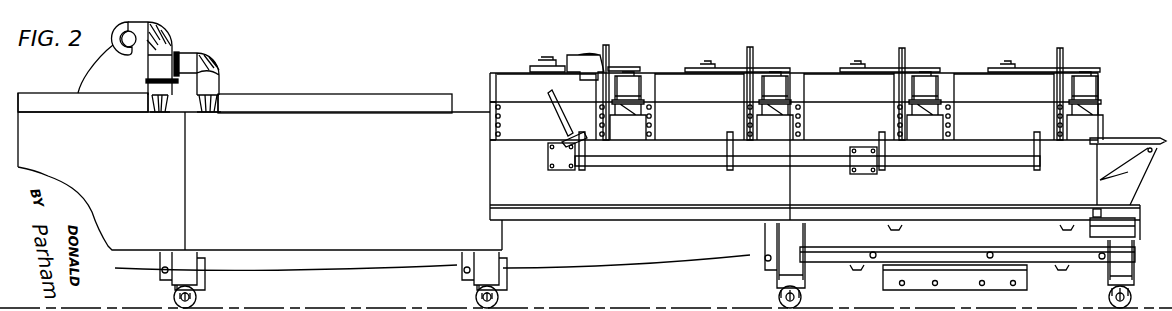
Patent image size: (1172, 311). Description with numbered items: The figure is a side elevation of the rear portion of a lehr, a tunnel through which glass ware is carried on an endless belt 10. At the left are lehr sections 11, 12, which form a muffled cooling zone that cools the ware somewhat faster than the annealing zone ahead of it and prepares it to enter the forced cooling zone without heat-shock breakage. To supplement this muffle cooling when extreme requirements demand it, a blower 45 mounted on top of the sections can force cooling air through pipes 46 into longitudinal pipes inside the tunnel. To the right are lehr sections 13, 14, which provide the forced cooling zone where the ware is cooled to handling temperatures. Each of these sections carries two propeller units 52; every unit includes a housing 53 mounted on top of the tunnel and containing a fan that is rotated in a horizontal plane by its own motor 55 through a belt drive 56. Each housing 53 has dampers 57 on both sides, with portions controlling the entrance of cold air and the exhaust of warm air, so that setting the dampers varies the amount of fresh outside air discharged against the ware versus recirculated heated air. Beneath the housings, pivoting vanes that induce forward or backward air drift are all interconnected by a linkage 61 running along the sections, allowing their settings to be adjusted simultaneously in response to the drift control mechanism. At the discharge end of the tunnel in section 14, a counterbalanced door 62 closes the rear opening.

The endless belt 10 is at (665, 265).
The lehr section 11 is at (50, 90).
The lehr section 12 is at (312, 92).
The lehr section 13 is at (487, 82).
The lehr section 14 is at (815, 70).
The blower 45 is at (118, 83).
The pipes 46 is at (150, 45).
The propeller unit 52 is at (548, 62).
The housing 53 is at (490, 128).
The motor 55 is at (645, 88).
The belt drive 56 is at (618, 67).
The dampers 57 is at (505, 88).
The linkage 61 is at (662, 165).
The counterbalanced door 62 is at (1136, 183).